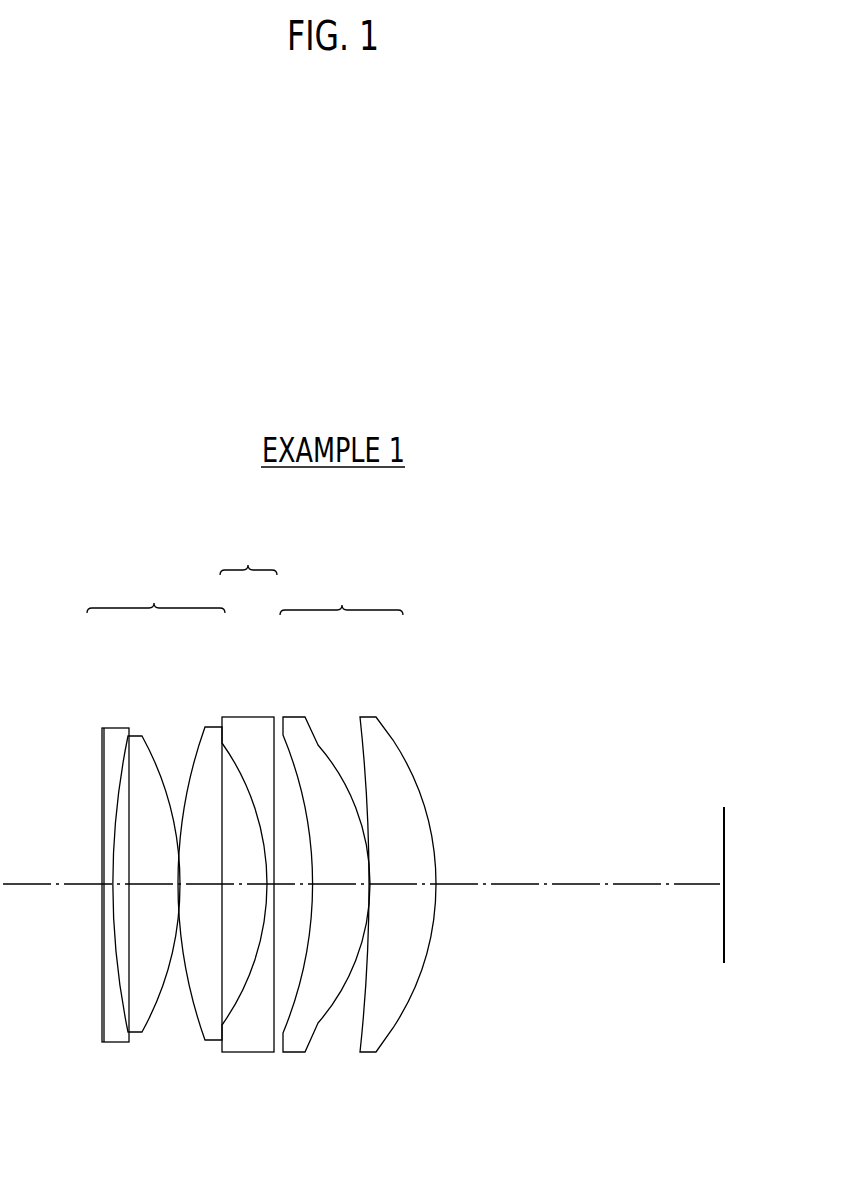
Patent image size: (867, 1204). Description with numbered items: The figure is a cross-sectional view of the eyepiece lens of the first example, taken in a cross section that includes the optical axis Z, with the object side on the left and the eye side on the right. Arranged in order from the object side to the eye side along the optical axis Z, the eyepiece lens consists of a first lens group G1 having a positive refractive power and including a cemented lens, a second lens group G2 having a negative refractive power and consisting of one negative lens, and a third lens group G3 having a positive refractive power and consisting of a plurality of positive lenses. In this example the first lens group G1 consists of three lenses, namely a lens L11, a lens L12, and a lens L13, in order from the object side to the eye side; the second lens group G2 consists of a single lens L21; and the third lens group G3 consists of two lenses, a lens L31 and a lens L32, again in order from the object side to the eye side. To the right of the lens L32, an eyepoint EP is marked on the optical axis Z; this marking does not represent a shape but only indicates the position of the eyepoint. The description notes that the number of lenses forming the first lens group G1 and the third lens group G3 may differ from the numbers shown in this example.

The first lens group G1 is at (156, 588).
The second lens group G2 is at (248, 550).
The third lens group G3 is at (341, 592).
The lens L11 is at (113, 727).
The lens L12 is at (135, 735).
The lens L13 is at (213, 727).
The lens L21 is at (257, 716).
The lens L31 is at (293, 716).
The lens L32 is at (365, 716).
The eyepoint EP is at (724, 833).
The optical axis Z is at (613, 885).